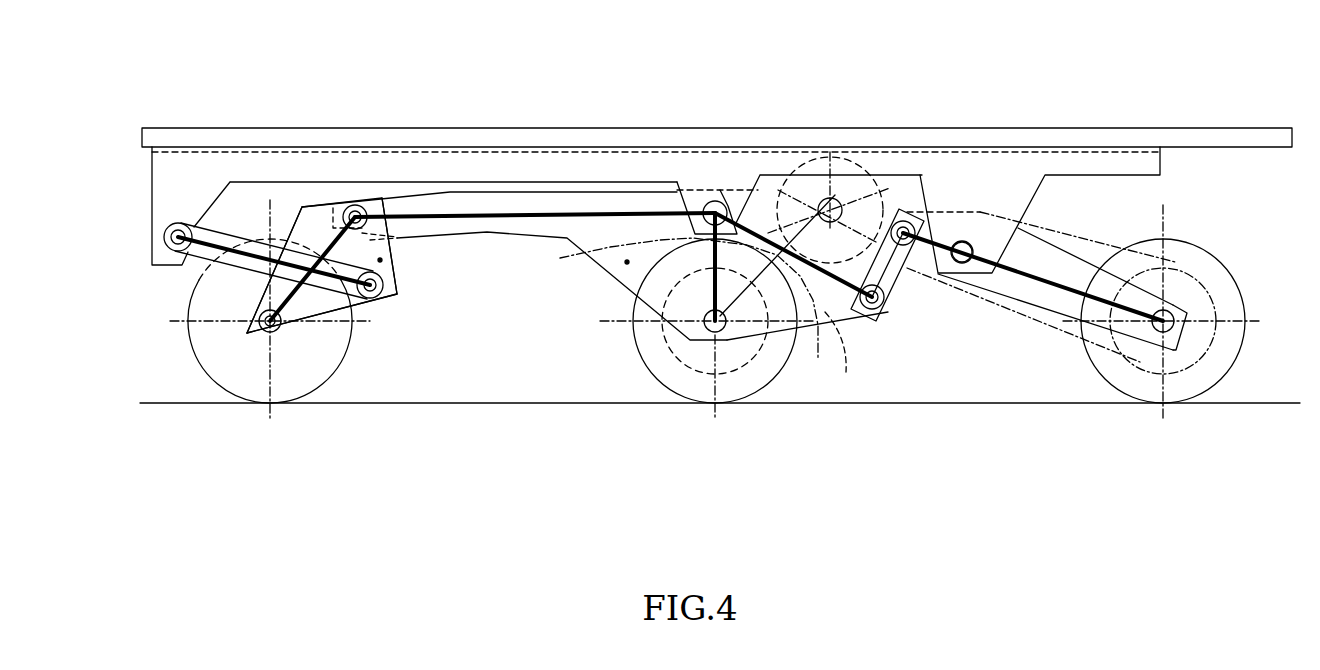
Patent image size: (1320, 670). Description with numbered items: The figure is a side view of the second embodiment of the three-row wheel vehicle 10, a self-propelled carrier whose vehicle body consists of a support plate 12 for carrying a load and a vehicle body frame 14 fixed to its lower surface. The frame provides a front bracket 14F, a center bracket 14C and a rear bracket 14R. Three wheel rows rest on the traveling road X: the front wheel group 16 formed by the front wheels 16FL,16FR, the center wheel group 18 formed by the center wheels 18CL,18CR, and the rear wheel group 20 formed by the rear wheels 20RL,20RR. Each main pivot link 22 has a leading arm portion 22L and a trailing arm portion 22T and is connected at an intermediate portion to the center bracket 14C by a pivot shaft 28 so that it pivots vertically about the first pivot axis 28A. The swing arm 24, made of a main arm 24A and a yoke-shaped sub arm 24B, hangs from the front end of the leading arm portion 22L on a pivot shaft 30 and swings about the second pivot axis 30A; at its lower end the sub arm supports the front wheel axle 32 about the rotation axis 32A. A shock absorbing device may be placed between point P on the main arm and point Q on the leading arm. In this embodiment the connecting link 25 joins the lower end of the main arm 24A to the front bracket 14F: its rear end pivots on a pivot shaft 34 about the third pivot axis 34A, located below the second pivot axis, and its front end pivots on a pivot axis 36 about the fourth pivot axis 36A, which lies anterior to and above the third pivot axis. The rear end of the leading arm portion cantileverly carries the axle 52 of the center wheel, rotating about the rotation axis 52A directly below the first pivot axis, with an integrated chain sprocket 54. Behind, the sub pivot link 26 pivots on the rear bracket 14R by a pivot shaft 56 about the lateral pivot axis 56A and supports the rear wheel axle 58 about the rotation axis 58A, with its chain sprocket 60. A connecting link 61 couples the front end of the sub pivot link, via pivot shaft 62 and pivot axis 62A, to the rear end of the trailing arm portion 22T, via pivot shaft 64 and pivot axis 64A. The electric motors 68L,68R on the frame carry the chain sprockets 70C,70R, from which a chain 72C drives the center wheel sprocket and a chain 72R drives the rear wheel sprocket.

The three-row wheel vehicle 10 is at (155, 108).
The support plate 12 is at (1245, 128).
The vehicle body frame 14 is at (1125, 162).
The front bracket 14F is at (195, 172).
The center bracket 14C is at (690, 200).
The rear bracket 14R is at (1010, 195).
The front wheel group 16 is at (214, 384).
The front wheels 16FL,16FR is at (210, 358).
The center wheel group 18 is at (657, 385).
The center wheels 18CL,18CR is at (771, 369).
The rear wheel group 20 is at (1107, 389).
The rear wheels 20RL,20RR is at (1197, 383).
The main pivot link 22 is at (553, 181).
The leading arm portion 22L is at (481, 190).
The trailing arm portion 22T is at (833, 322).
The swing arm 24 is at (312, 205).
The main arm 24A is at (383, 248).
The sub arm 24B is at (307, 328).
The connecting link 25 is at (247, 229).
The sub pivot link 26 is at (1074, 251).
The pivot shaft 28 is at (712, 200).
The first pivot axis 28A is at (727, 202).
The pivot shaft 30 is at (370, 222).
The second pivot axis 30A is at (354, 205).
The axle 32 is at (260, 333).
The rotation axis 32A is at (259, 318).
The pivot shaft 34 is at (384, 304).
The third pivot axis 34A is at (367, 298).
The pivot axis 36 is at (165, 243).
The fourth pivot axis 36A is at (164, 232).
The axle 52 is at (700, 327).
The rotation axis 52A is at (716, 334).
The chain sprocket 54 is at (733, 373).
The pivot shaft 56 is at (961, 264).
The lateral pivot axis 56A is at (962, 241).
The axle 58 is at (1178, 310).
The rotation axis 58A is at (1184, 336).
The chain sprocket 60 is at (1193, 264).
The connecting link 61 is at (908, 273).
The pivot shaft 62 is at (918, 210).
The lateral pivot axis 62A is at (903, 220).
The pivot shaft 64 is at (868, 311).
The lateral pivot axis 64A is at (883, 318).
The electric motors 68L,68R is at (797, 165).
The chain sprockets 70C,70R is at (830, 157).
The chain 72C is at (588, 250).
The chain 72R is at (1030, 318).
The point P is at (384, 263).
The point Q is at (625, 264).
The traveling road X is at (517, 398).